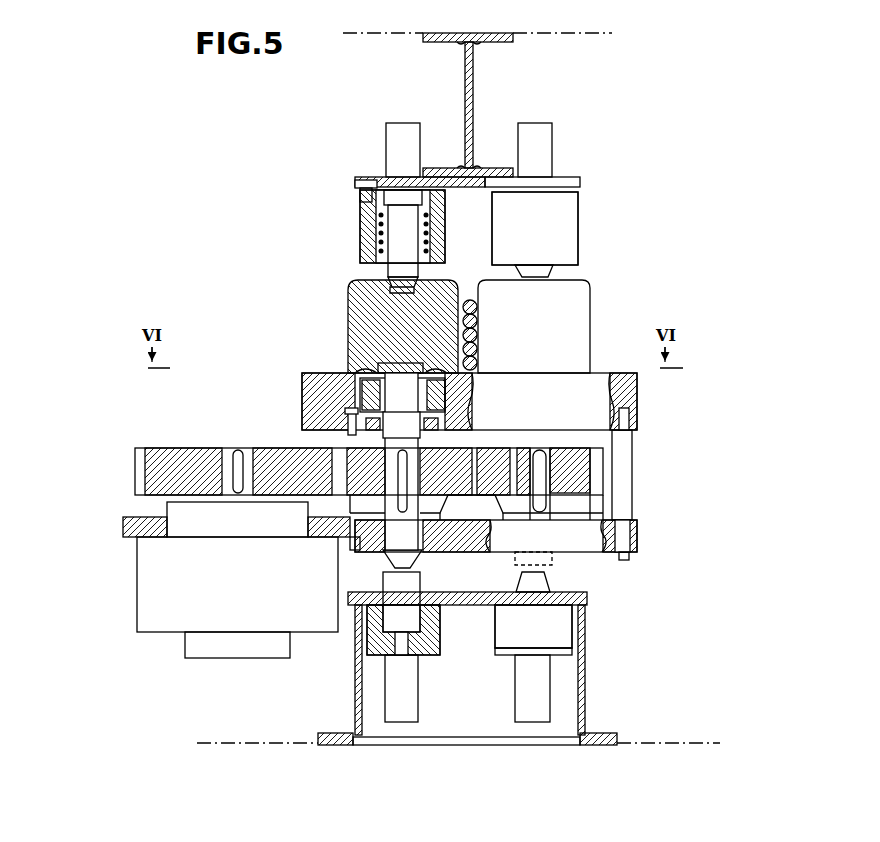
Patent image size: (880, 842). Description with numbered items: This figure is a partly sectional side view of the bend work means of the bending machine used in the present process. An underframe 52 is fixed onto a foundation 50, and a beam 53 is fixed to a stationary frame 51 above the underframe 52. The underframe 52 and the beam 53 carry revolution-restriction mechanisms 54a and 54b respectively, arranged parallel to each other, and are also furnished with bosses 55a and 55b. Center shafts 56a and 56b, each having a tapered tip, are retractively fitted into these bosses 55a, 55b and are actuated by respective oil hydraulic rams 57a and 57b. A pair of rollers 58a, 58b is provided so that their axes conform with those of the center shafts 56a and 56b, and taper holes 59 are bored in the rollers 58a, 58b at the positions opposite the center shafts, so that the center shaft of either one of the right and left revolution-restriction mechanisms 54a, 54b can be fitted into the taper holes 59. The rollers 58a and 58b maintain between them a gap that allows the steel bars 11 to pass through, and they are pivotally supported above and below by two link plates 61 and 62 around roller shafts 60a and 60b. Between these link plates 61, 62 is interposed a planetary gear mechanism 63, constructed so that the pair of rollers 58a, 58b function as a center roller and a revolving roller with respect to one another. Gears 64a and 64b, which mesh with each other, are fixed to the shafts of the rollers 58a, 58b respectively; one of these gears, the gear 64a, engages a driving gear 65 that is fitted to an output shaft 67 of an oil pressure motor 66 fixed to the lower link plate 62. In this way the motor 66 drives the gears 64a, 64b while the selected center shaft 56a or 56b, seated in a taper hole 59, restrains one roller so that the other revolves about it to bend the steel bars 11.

The steel bars 11 is at (470, 298).
The foundation 50 is at (635, 742).
The stationary frame 51 is at (570, 33).
The underframe 52 is at (578, 653).
The beam 53 is at (472, 112).
The revolution-restriction mechanism 54a is at (382, 168).
The revolution-restriction mechanism 54b is at (558, 170).
The boss 55a is at (362, 232).
The boss 55b is at (572, 230).
The center shaft 56a is at (387, 253).
The center shaft 56b is at (548, 268).
The oil hydraulic ram 57a is at (405, 130).
The oil hydraulic ram 57b is at (548, 130).
The roller 58a is at (352, 312).
The roller 58b is at (583, 317).
The taper holes 59 is at (398, 283).
The roller shaft 60a is at (400, 442).
The roller shaft 60b is at (625, 465).
The link plate 61 is at (628, 410).
The link plate 62 is at (632, 545).
The planetary gear mechanism 63 is at (305, 440).
The gear 64a is at (445, 483).
The gear 64b is at (585, 480).
The driving gear 65 is at (180, 448).
The oil pressure motor 66 is at (172, 627).
The output shaft 67 is at (218, 448).